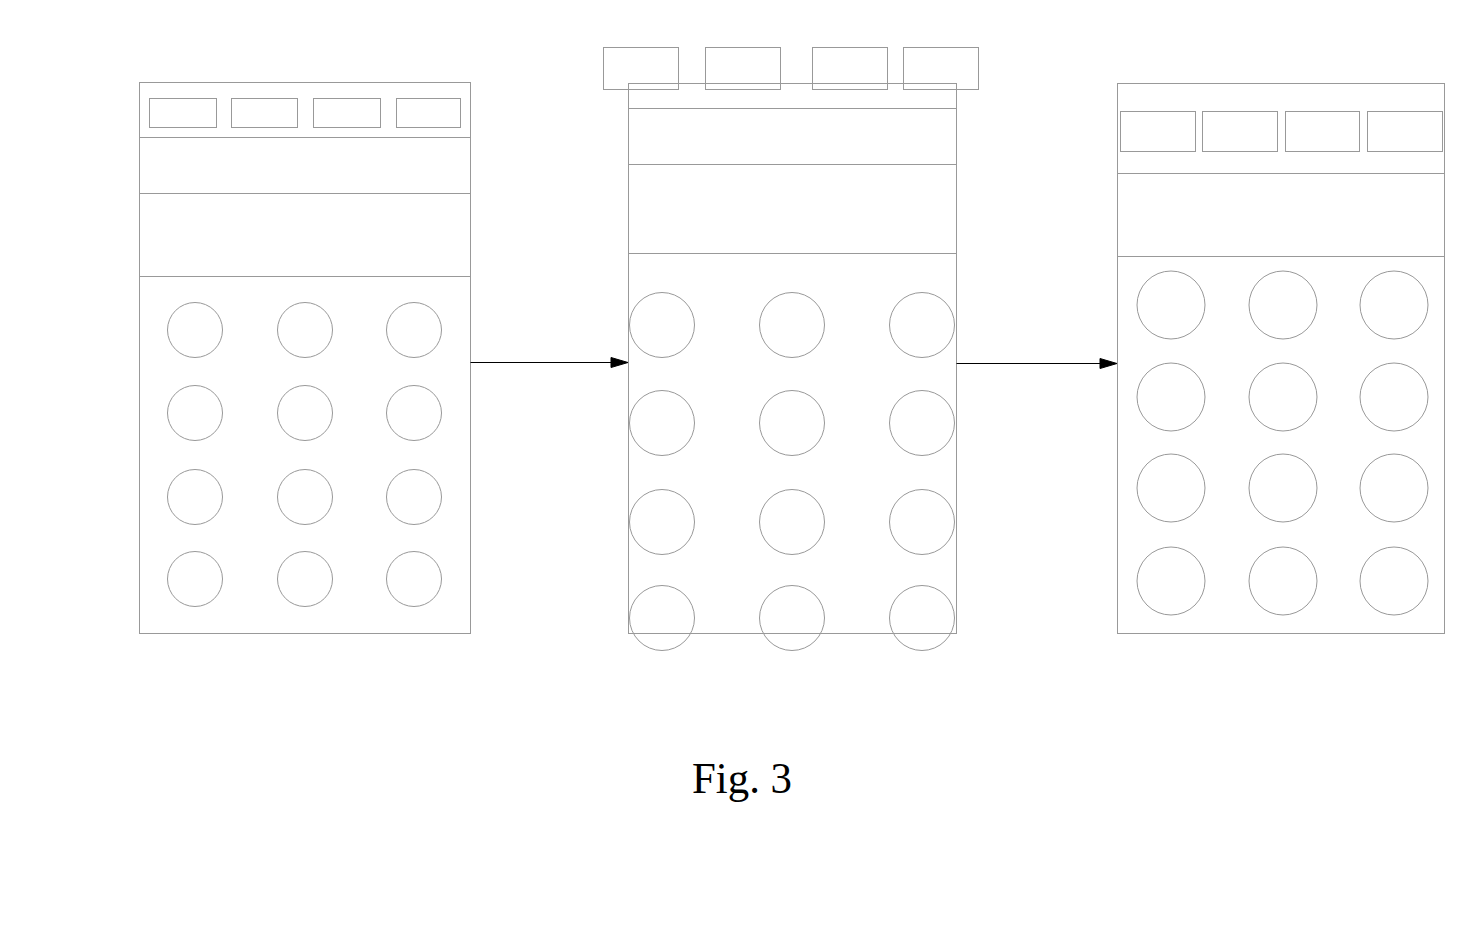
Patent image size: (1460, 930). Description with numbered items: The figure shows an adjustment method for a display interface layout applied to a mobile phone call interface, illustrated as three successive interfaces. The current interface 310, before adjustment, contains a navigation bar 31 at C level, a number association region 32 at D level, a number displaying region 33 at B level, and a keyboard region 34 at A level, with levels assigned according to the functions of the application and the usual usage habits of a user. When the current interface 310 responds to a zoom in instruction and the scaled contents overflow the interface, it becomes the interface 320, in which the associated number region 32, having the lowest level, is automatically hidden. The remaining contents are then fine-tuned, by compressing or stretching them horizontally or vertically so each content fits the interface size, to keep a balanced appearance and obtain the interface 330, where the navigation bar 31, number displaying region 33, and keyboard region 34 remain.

The navigation bar 31 is at (140, 112).
The number association region 32 is at (140, 166).
The number displaying region 33 is at (140, 222).
The keyboard region 34 is at (140, 414).
The current interface 310 is at (272, 379).
The interface 320 is at (846, 634).
The interface 330 is at (1292, 634).